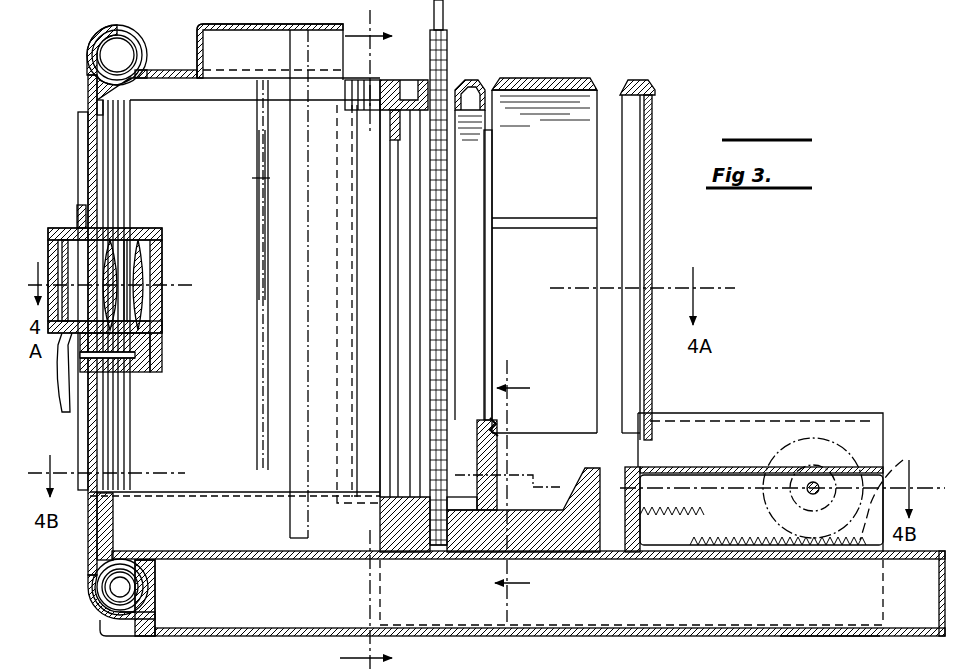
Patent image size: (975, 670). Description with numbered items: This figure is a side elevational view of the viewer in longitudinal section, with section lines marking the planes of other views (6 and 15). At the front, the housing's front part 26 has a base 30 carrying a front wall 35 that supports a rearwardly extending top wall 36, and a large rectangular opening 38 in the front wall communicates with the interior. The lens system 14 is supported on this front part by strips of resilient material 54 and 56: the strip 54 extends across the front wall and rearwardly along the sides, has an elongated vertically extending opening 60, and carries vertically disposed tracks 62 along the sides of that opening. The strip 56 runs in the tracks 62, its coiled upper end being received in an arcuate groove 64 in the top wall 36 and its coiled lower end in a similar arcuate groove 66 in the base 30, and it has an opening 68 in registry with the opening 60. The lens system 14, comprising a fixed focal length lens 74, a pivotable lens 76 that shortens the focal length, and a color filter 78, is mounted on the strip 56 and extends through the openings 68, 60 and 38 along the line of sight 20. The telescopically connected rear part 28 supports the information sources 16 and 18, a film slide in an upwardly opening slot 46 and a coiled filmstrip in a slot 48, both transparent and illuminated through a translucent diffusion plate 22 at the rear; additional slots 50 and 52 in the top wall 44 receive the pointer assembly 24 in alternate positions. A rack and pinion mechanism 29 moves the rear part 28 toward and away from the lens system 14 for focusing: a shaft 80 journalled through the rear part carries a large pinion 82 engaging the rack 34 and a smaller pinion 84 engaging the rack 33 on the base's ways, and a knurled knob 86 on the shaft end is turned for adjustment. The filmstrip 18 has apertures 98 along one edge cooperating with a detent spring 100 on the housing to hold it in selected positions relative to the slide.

The lens system 14 is at (164, 232).
The information source 16 is at (262, 178).
The information source 18 is at (352, 246).
The line of sight 20 is at (170, 284).
The translucent diffusion plate 22 is at (652, 152).
The pointer assembly 24 is at (450, 40).
The front part 26 is at (228, 636).
The rear part 28 is at (866, 413).
The rack and pinion mechanism 29 is at (854, 451).
The base 30 is at (132, 618).
The rack 33 is at (690, 506).
The rack 34 is at (898, 496).
The front wall 35 is at (95, 535).
The top wall 36 is at (133, 68).
The rectangular opening 38 is at (110, 440).
The top wall 44 is at (560, 80).
The slot 46 is at (400, 84).
The slot 48 is at (495, 88).
The slot 50 is at (458, 82).
The slot 52 is at (628, 82).
The strip of resilient material 54 is at (103, 112).
The strip of resilient material 56 is at (88, 565).
The elongated vertically extending opening 60 is at (105, 168).
The track 62 is at (80, 145).
The arcuate groove 64 is at (117, 80).
The arcuate groove 66 is at (100, 605).
The opening 68 is at (78, 222).
The lens 74 is at (105, 316).
The lens 76 is at (148, 305).
The color filter 78 is at (62, 262).
The shaft 80 is at (806, 495).
The large pinion 82 is at (813, 438).
The smaller pinion 84 is at (830, 520).
The knurled knob 86 is at (795, 660).
The aperture 98 is at (487, 425).
The detent spring 100 is at (500, 428).
The section line 6 is at (374, 340).
The section line 15 is at (527, 491).